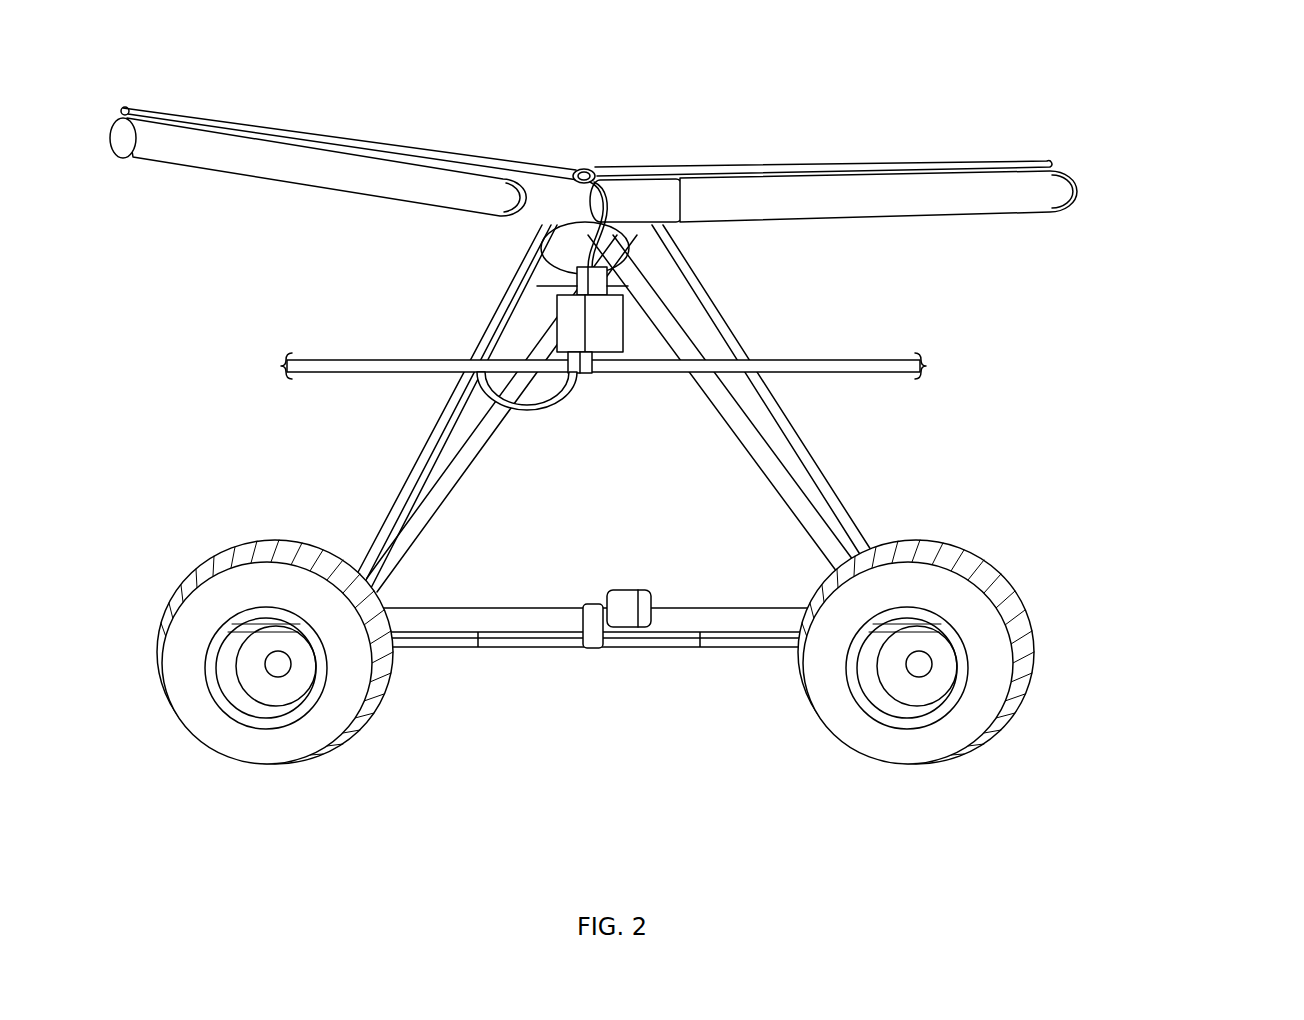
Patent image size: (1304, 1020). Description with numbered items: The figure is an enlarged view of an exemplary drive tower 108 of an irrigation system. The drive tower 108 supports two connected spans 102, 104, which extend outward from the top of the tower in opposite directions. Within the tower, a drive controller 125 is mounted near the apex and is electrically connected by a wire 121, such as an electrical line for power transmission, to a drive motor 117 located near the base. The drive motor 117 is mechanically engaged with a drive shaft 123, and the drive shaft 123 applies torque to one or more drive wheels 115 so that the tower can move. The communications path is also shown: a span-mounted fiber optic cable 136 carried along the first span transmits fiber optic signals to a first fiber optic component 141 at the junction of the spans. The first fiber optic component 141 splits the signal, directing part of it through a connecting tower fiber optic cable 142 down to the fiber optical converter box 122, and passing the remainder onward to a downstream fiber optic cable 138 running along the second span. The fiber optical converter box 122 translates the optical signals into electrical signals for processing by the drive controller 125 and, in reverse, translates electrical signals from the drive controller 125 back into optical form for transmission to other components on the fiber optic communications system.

The span 102 is at (213, 143).
The span 104 is at (993, 192).
The span-mounted fiber optic cable 136 is at (417, 148).
The downstream fiber optic cable 138 is at (872, 165).
The first fiber optic component 141 is at (595, 170).
The connecting tower fiber optic cable 142 is at (602, 190).
The fiber optical converter box 122 is at (578, 278).
The drive controller 125 is at (577, 323).
The drive tower 108 is at (702, 292).
The wire 121 is at (543, 405).
The drive shaft 123 is at (542, 640).
The drive motor 117 is at (627, 612).
The drive wheel 115 is at (992, 638).